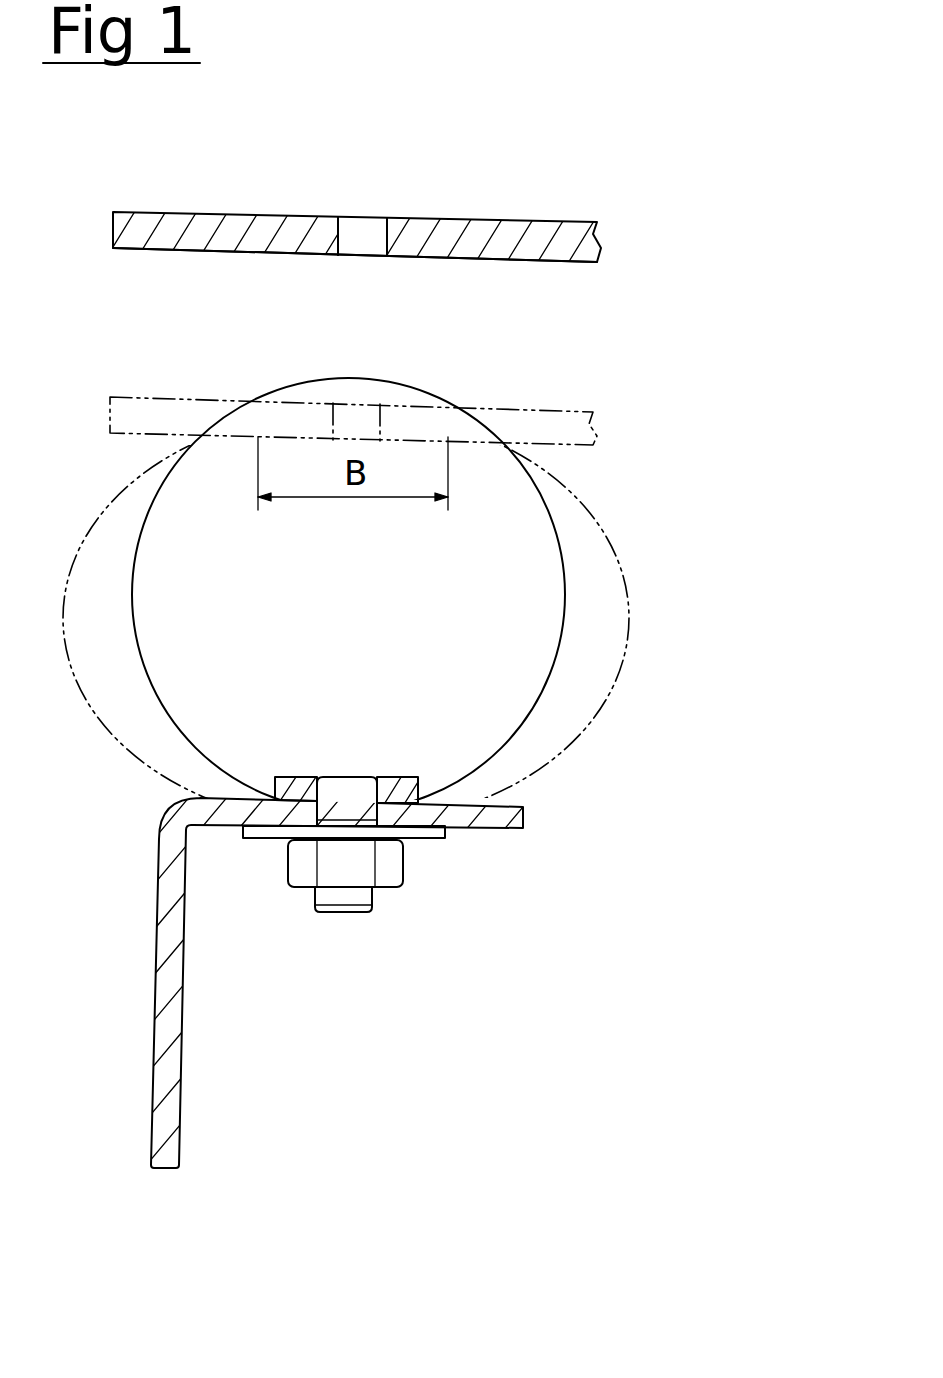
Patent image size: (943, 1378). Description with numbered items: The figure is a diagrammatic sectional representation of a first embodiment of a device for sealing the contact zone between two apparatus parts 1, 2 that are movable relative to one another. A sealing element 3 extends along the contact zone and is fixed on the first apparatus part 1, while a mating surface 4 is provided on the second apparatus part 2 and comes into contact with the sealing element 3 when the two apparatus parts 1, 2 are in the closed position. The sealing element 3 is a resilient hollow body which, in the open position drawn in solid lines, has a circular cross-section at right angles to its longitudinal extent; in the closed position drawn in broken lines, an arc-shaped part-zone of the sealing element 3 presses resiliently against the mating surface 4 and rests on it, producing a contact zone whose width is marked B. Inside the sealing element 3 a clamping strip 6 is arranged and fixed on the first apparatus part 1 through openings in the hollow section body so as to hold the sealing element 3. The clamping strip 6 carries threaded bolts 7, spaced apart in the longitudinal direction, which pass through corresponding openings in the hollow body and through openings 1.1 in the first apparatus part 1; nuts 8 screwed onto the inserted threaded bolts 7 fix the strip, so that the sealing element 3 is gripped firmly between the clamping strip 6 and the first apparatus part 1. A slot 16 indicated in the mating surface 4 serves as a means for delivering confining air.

The first apparatus part 1 is at (412, 1028).
The openings in the first apparatus part 1.1 is at (536, 935).
The second apparatus part 2 is at (476, 291).
The sealing element 3 is at (451, 601).
The mating surface 4 is at (481, 281).
The clamping strip 6 is at (556, 775).
The threaded bolts 7 is at (574, 848).
The nuts 8 is at (558, 1002).
The slot 16 is at (595, 134).